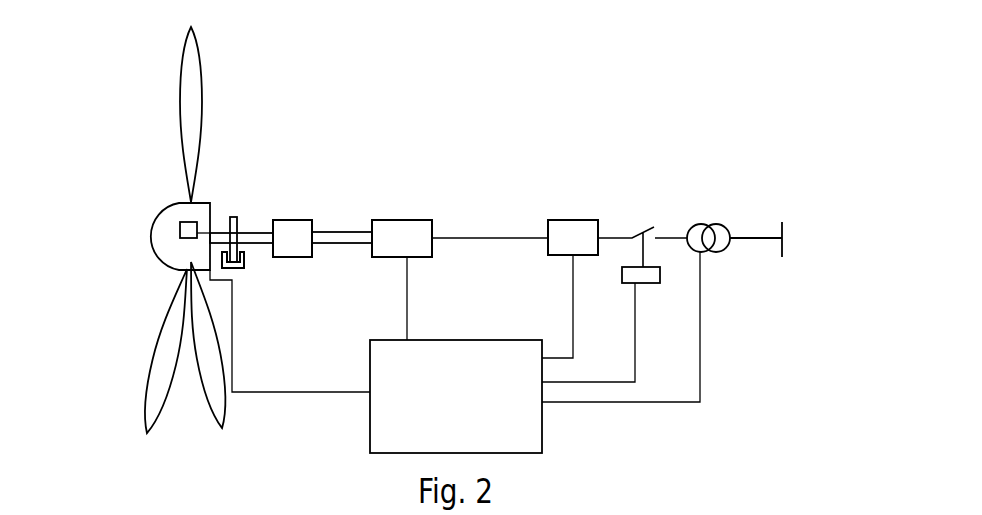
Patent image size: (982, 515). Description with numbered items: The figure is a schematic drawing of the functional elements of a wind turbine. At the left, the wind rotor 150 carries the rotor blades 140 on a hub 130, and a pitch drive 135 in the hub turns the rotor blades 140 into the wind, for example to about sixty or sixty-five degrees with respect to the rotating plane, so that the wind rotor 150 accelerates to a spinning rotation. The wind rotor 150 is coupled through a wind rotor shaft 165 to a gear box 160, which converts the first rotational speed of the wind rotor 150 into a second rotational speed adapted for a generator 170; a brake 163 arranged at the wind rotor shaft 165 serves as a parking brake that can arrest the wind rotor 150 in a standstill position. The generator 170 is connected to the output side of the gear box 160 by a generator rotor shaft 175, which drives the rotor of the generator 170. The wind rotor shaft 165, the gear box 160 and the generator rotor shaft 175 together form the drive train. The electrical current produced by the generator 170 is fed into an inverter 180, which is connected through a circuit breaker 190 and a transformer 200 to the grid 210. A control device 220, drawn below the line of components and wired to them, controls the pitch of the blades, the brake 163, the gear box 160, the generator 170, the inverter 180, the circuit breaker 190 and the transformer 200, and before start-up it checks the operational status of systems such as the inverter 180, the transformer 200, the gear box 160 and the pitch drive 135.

The hub 130 is at (160, 213).
The pitch drive 135 is at (195, 225).
The rotor blades 140 is at (185, 117).
The wind rotor 150 is at (159, 231).
The gear box 160 is at (312, 228).
The brake 163 is at (244, 268).
The wind rotor shaft 165 is at (249, 243).
The generator 170 is at (397, 230).
The generator rotor shaft 175 is at (339, 243).
The inverter 180 is at (583, 228).
The circuit breaker 190 is at (657, 210).
The transformer 200 is at (708, 253).
The grid 210 is at (784, 238).
The control device 220 is at (458, 405).